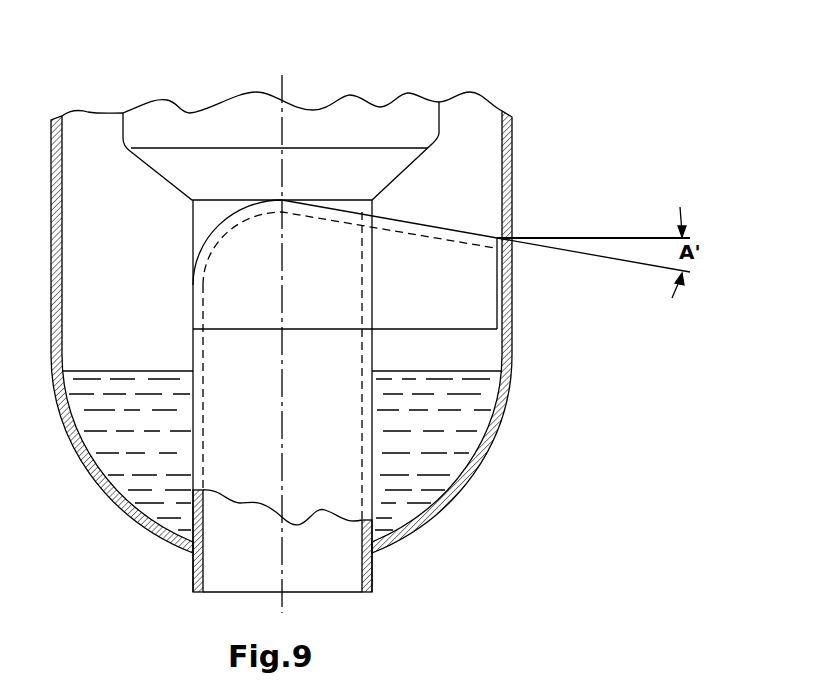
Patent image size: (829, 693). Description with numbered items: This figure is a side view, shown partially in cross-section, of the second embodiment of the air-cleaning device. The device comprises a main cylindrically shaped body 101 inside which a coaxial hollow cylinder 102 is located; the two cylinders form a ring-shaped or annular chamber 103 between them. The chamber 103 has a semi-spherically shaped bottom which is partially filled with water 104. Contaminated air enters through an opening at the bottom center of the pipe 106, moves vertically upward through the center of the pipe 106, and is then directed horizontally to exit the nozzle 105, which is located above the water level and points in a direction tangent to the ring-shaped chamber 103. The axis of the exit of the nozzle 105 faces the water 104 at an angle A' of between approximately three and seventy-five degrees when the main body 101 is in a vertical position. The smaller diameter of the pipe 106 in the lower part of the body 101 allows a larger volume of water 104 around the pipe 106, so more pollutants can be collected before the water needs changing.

The main body 101 is at (513, 141).
The hollow cylinder 102 is at (423, 123).
The annular chamber 103 is at (468, 208).
The water 104 is at (400, 462).
The nozzle 105 is at (465, 293).
The pipe 106 is at (367, 405).